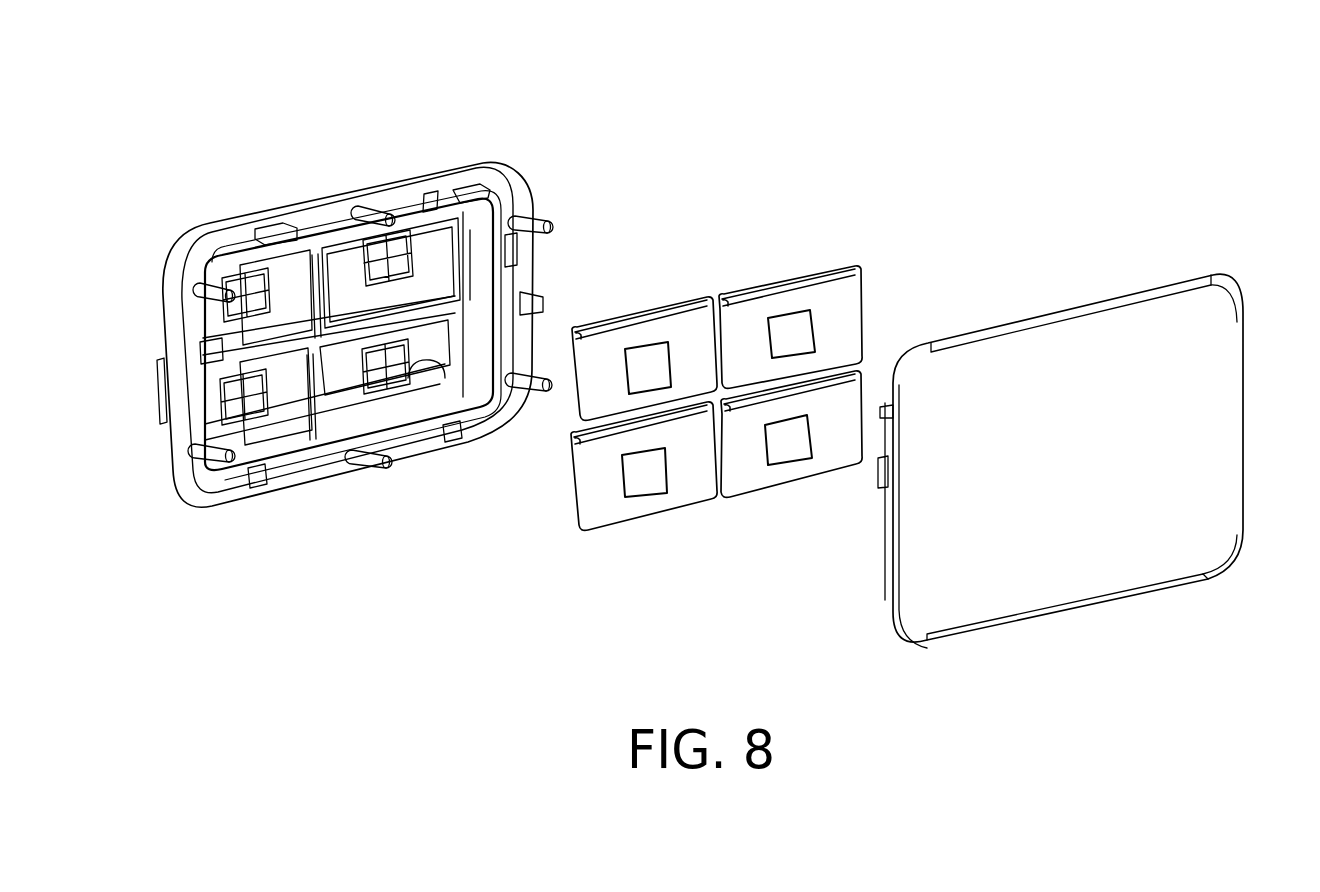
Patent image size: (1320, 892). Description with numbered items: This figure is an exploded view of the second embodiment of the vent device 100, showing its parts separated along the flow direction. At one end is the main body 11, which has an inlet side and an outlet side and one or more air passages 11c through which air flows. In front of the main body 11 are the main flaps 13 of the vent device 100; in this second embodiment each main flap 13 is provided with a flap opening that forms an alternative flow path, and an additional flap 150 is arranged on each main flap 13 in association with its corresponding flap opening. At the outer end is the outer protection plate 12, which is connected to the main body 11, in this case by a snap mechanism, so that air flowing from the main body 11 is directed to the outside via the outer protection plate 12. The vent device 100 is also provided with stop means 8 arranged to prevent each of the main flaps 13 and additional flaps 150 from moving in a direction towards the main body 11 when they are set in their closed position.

The vent device 100 is at (922, 149).
The main body 11 is at (330, 220).
The air passage 11c is at (427, 240).
The stop means 8 is at (412, 362).
The main flap 13 is at (837, 323).
The additional flap 150 is at (793, 333).
The outer protection plate 12 is at (1090, 370).